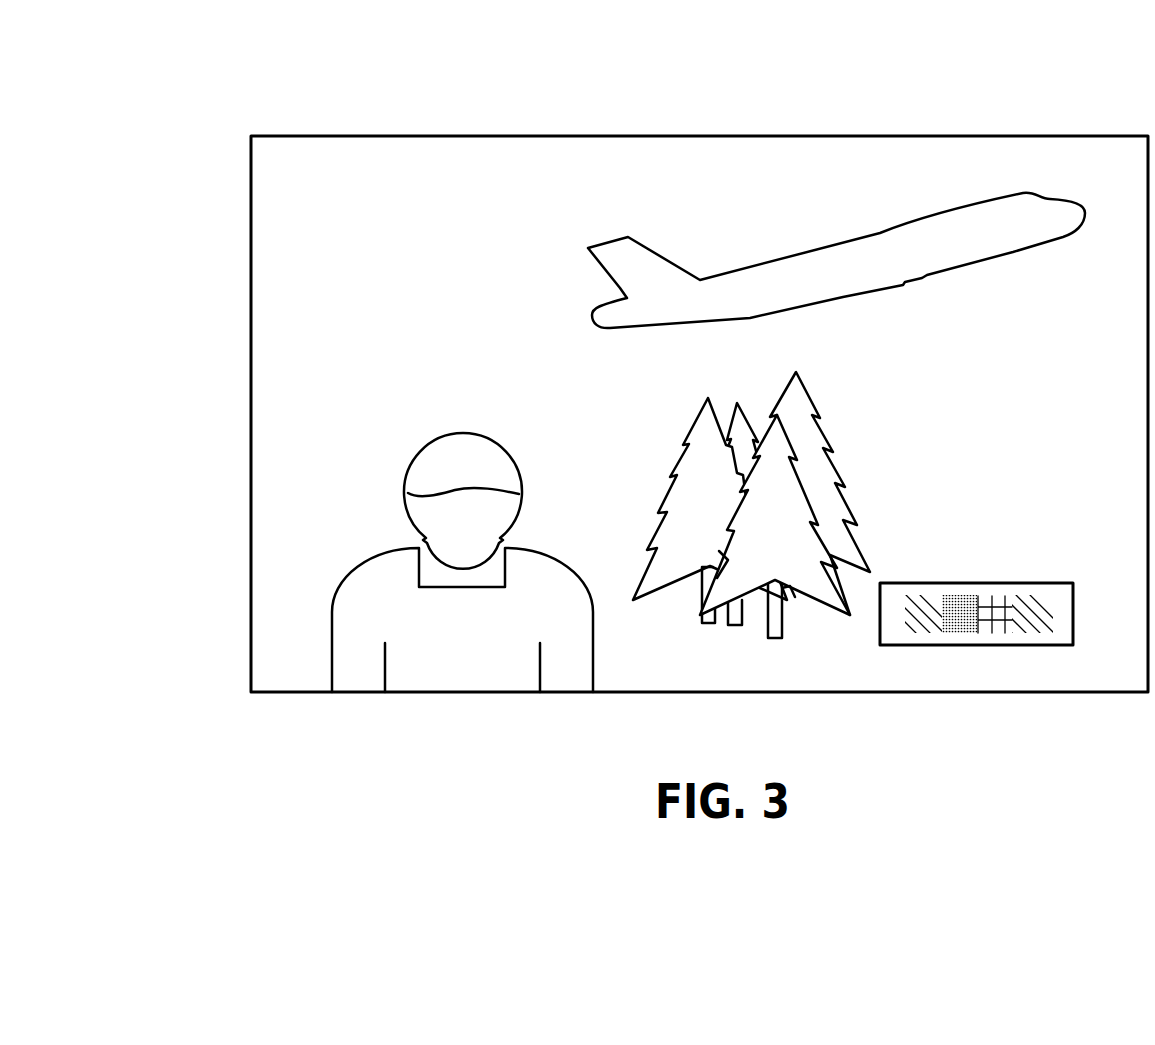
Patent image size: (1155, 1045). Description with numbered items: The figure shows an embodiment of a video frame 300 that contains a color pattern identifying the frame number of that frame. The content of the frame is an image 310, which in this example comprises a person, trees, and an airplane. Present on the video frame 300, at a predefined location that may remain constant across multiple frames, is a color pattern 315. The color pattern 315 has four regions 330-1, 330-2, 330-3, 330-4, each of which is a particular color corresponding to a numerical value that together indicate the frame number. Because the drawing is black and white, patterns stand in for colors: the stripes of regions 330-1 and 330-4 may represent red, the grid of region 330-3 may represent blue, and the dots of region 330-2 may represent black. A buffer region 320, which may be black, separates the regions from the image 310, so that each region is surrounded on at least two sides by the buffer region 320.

The video frame 300 is at (174, 112).
The image 310 is at (428, 246).
The color pattern 315 is at (990, 586).
The buffer region 320 is at (892, 648).
The region 330-1 is at (932, 598).
The region 330-2 is at (962, 597).
The region 330-3 is at (1002, 633).
The region 330-4 is at (1042, 597).